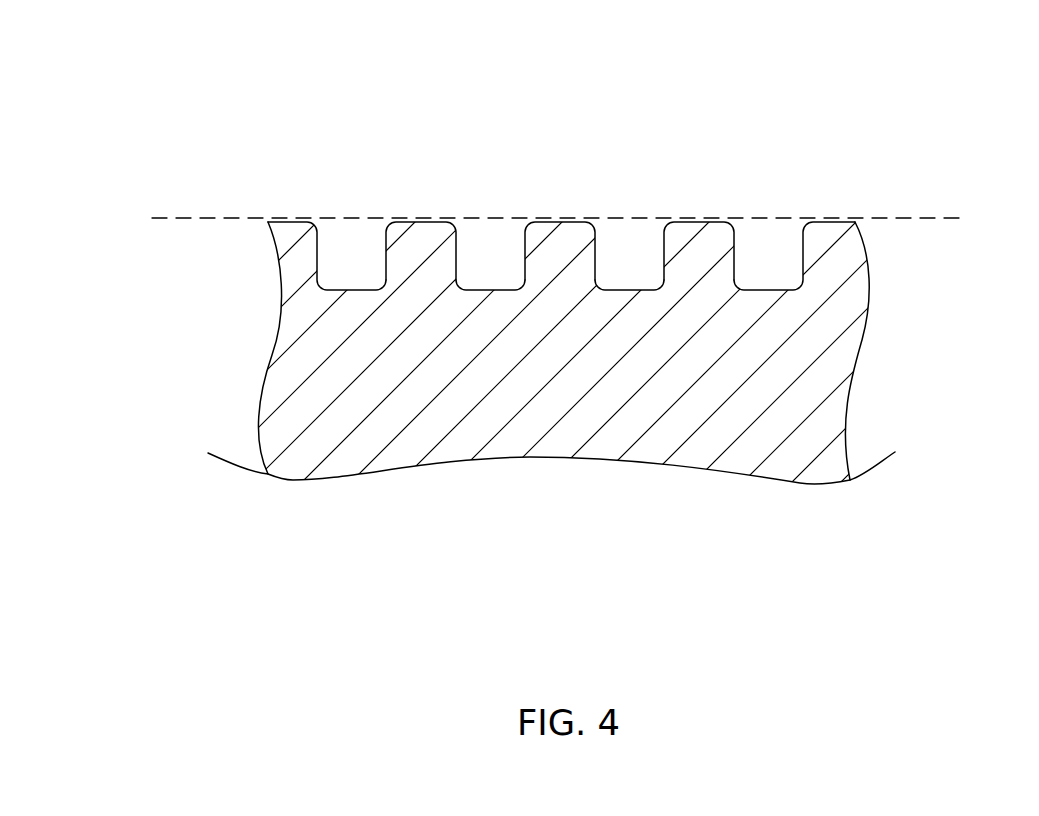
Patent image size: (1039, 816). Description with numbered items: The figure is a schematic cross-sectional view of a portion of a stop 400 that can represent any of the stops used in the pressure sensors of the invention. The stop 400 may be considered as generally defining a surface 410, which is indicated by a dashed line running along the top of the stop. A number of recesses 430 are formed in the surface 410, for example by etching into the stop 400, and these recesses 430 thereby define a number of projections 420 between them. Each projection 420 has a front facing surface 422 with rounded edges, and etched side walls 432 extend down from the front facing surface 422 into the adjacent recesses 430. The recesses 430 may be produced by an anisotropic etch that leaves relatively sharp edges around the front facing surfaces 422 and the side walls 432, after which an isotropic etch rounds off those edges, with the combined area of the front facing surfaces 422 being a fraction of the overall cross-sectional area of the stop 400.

The stop 400 is at (299, 98).
The surface 410 is at (931, 218).
The projections 420 is at (420, 219).
The front facing surfaces 422 is at (559, 219).
The recesses 430 is at (480, 290).
The side walls 432 is at (664, 254).